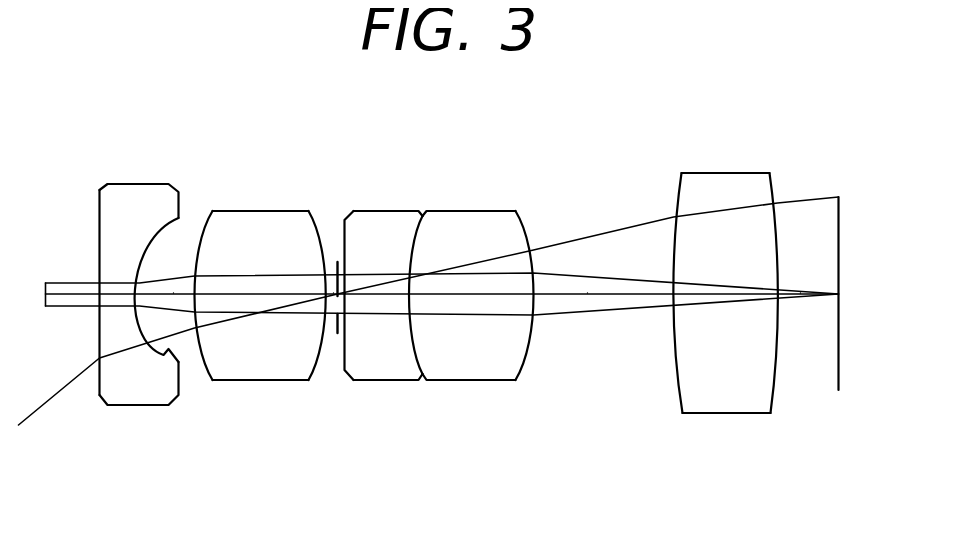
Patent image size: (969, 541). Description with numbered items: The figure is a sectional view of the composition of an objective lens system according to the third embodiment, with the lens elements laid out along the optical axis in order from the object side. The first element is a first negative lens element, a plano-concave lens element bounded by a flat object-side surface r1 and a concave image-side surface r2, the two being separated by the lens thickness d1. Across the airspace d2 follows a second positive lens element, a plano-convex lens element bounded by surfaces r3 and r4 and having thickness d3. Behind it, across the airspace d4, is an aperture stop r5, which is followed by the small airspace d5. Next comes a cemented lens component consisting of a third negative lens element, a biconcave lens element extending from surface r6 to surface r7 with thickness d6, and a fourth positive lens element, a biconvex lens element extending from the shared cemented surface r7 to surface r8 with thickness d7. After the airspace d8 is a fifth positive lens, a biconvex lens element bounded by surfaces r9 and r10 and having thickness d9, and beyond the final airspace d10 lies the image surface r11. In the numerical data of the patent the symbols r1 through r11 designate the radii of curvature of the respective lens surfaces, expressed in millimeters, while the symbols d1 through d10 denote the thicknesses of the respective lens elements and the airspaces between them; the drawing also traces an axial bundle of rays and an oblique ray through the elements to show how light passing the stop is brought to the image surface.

The thickness of first negative lens element d1 is at (121, 293).
The airspace between first and second lens elements d2 is at (173, 293).
The thickness of second positive lens element d3 is at (258, 293).
The airspace between second lens element and aperture stop d4 is at (333, 293).
The airspace between aperture stop and third lens element d5 is at (345, 293).
The thickness of third negative lens element d6 is at (370, 293).
The thickness of fourth positive lens element d7 is at (477, 293).
The airspace between cemented lens component and fifth lens d8 is at (587, 293).
The thickness of fifth positive lens d9 is at (713, 293).
The airspace between fifth lens and image surface d10 is at (800, 293).
The object-side surface of first negative lens element r1 is at (99, 380).
The image-side surface of first negative lens element r2 is at (179, 368).
The object-side surface of second positive lens element r3 is at (200, 366).
The image-side surface of second positive lens element r4 is at (323, 340).
The aperture stop r5 is at (337, 333).
The object-side surface of third negative lens element r6 is at (344, 352).
The cemented surface between third and fourth lens elements r7 is at (414, 343).
The image-side surface of fourth positive lens element r8 is at (531, 335).
The object-side surface of fifth positive lens r9 is at (673, 360).
The image-side surface of fifth positive lens r10 is at (777, 360).
The image surface r11 is at (838, 358).